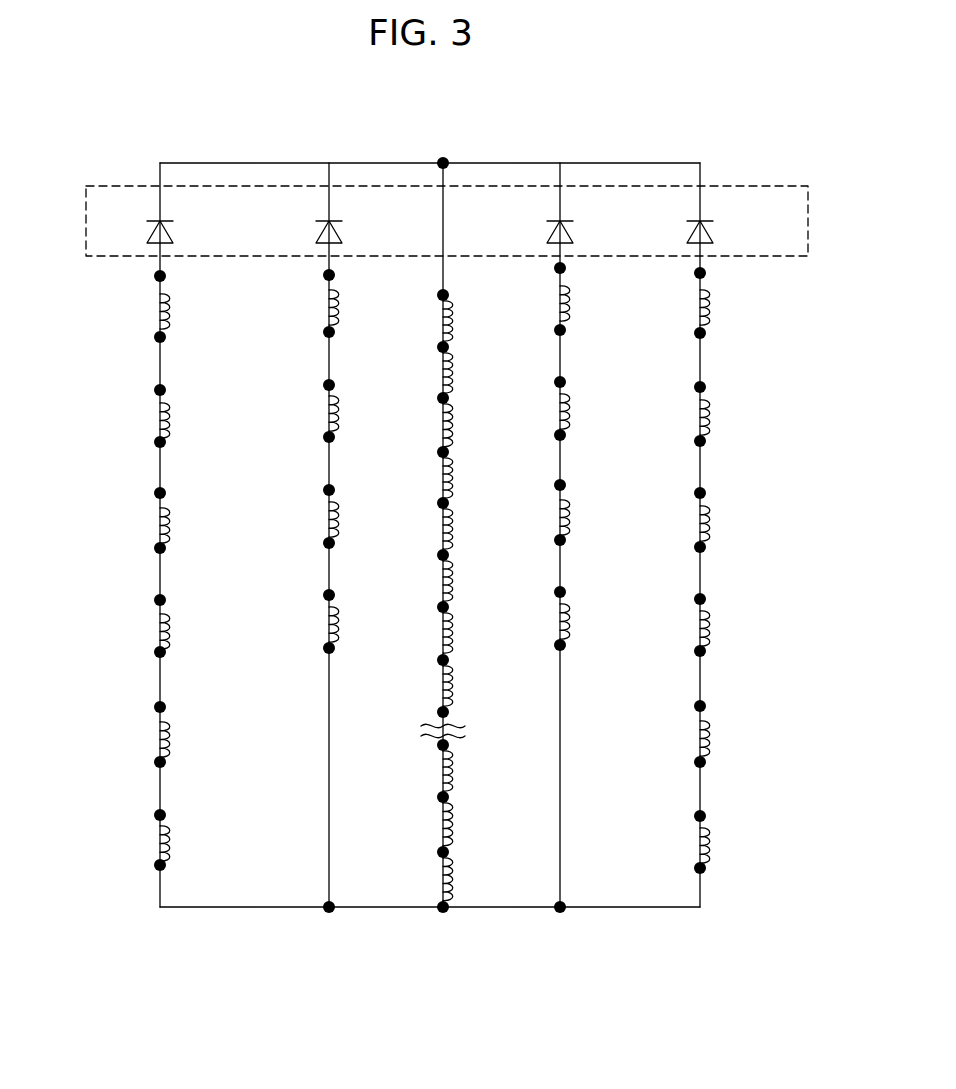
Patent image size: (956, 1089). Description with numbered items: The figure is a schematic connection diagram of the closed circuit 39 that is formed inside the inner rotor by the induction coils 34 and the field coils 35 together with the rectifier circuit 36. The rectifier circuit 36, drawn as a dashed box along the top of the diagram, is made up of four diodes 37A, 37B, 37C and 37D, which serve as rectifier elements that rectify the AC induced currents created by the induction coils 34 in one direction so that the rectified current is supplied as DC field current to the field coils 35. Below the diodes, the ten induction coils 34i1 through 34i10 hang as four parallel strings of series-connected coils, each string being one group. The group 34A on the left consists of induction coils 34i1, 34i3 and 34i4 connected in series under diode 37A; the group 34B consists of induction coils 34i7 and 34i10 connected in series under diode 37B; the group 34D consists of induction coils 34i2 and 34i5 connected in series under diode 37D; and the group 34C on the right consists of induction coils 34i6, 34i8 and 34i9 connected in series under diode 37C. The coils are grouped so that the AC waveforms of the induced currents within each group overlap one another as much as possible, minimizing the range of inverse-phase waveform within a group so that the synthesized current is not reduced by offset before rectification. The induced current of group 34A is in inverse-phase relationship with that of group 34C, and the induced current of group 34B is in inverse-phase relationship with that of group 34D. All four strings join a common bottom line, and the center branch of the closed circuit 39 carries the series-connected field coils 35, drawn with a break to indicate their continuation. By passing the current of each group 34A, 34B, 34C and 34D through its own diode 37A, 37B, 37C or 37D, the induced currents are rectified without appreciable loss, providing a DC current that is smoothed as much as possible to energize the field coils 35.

The closed circuit 39 is at (510, 134).
The rectifier circuit 36 is at (742, 186).
The diode 37A is at (170, 232).
The diode 37B is at (339, 232).
The diode 37C is at (710, 232).
The diode 37D is at (570, 232).
The induction coil 34 is at (101, 894).
The first group of induction coils 34A is at (97, 862).
The second group of induction coils 34B is at (263, 291).
The third group of induction coils 34C is at (778, 291).
The fourth group of induction coils 34D is at (628, 291).
The induction coil 34i1 is at (158, 311).
The induction coil 34i2 is at (570, 301).
The induction coil 34i3 is at (158, 417).
The induction coil 34i4 is at (158, 521).
The induction coil 34i5 is at (570, 409).
The induction coil 34i6 is at (710, 310).
The induction coil 34i7 is at (327, 305).
The induction coil 34i8 is at (710, 415).
The induction coil 34i9 is at (710, 521).
The induction coil 34i10 is at (327, 410).
The field coil 35 is at (456, 418).